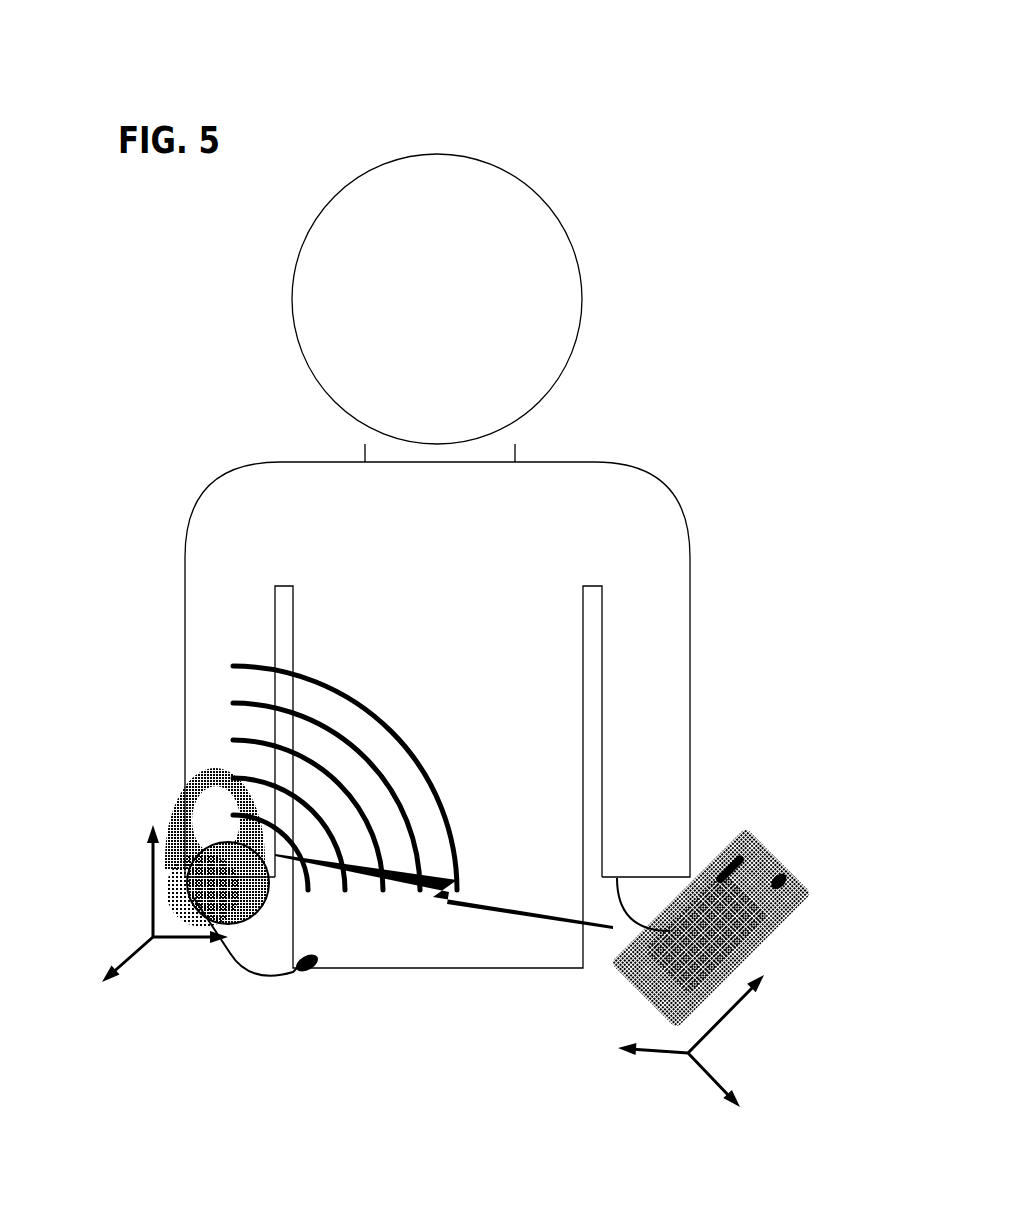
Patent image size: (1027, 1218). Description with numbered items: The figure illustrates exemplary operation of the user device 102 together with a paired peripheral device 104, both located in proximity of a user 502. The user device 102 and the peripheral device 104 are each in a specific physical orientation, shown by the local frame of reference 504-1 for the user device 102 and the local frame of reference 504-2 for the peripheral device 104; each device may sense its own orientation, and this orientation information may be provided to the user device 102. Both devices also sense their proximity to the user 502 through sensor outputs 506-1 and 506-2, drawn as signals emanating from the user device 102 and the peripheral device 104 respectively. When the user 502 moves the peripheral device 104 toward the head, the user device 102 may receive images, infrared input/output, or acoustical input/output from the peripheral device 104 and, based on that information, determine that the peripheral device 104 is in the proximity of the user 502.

The user 502 is at (437, 153).
The peripheral device 104 is at (177, 787).
The sensor output 506-2 is at (348, 690).
The sensor output 506-1 is at (734, 617).
The user device 102 is at (766, 838).
The local frame of reference 504-2 is at (133, 957).
The local frame of reference 504-1 is at (733, 1012).